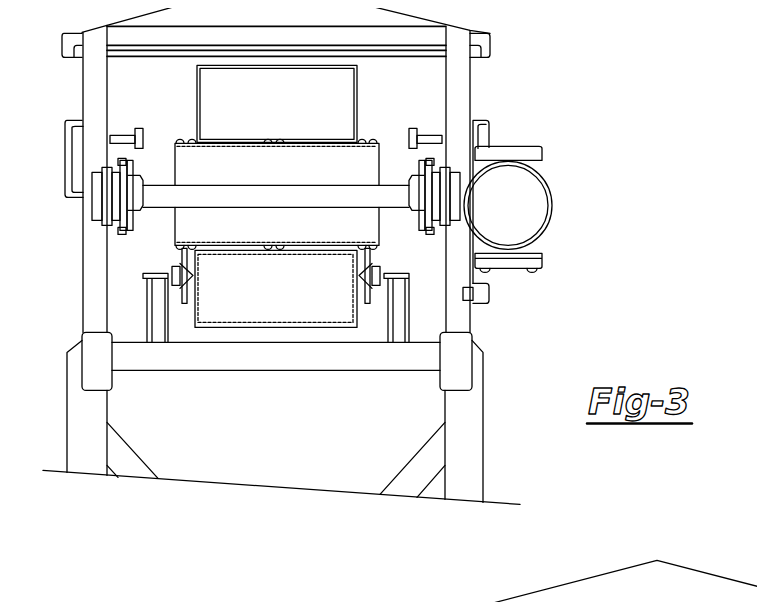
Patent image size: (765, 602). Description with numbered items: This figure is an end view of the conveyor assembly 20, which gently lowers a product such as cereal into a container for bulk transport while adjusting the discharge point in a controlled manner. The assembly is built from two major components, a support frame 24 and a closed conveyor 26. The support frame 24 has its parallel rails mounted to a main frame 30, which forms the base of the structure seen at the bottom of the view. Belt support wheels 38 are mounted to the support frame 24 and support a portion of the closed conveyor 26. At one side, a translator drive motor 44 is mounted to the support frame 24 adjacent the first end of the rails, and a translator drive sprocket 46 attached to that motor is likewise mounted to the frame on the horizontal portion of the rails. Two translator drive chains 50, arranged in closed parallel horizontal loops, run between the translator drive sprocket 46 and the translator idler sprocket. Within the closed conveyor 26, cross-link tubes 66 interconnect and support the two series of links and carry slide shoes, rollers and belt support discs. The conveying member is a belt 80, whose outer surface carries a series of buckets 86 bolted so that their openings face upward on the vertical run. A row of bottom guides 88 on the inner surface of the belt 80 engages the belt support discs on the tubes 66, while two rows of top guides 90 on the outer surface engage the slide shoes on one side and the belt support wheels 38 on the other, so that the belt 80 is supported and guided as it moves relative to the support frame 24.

The conveyor assembly 20 is at (199, 511).
The support frame 24 is at (458, 85).
The closed conveyor 26 is at (200, 169).
The main frame 30 is at (407, 473).
The belt support wheels 38 is at (188, 330).
The translator drive motor 44 is at (533, 200).
The translator drive sprocket 46 is at (125, 232).
The translator drive chains 50 is at (126, 160).
The cross-link tubes 66 is at (385, 185).
The belt 80 is at (356, 237).
The buckets 86 is at (286, 112).
The bottom guides 88 is at (282, 245).
The top guides 90 is at (360, 140).